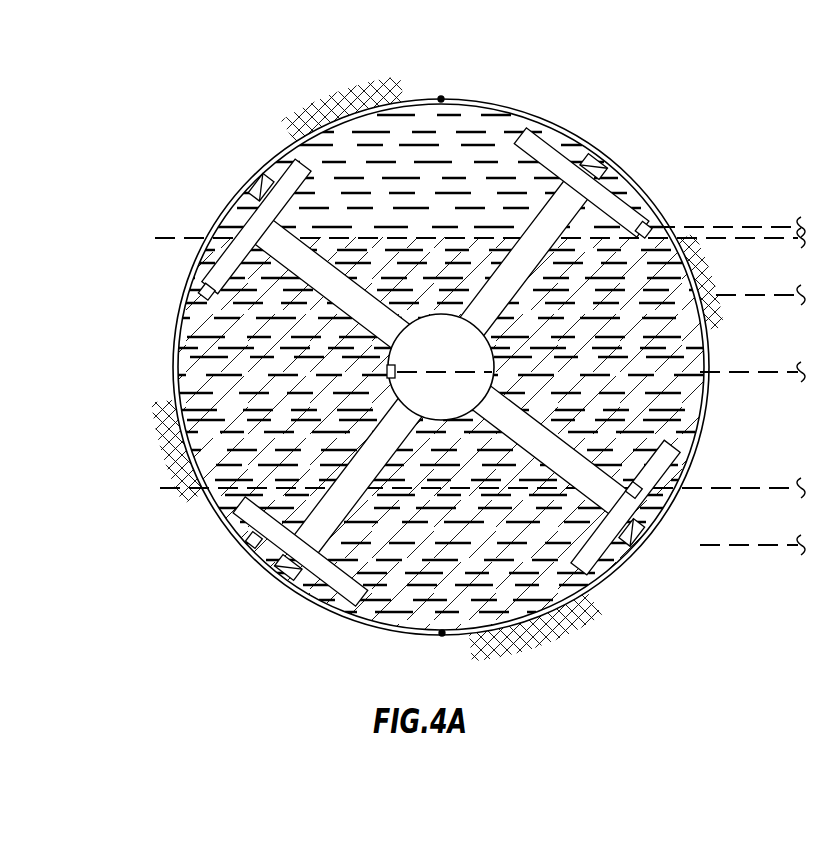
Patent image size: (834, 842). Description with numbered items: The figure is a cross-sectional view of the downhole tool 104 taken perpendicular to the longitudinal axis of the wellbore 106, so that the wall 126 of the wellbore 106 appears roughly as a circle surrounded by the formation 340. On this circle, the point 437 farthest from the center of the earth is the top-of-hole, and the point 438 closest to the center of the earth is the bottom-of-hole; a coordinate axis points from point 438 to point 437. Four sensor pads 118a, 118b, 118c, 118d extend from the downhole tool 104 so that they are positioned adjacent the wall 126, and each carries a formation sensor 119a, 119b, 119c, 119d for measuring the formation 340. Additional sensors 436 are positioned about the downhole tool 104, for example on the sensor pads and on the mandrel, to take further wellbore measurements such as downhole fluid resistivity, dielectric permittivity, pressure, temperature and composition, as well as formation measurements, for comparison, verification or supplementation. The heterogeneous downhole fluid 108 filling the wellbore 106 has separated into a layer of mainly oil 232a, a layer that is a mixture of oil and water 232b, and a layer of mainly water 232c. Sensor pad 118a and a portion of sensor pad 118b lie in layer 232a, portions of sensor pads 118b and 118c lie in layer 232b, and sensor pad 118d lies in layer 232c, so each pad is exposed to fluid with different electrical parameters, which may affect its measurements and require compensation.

The formation 340 is at (641, 114).
The downhole tool 104 is at (469, 246).
The wellbore 106 is at (529, 607).
The downhole fluid 108 is at (203, 348).
The wall 126 is at (378, 101).
The sensor pad 118a is at (620, 196).
The sensor pad 118b is at (237, 222).
The sensor pad 118c is at (652, 511).
The sensor pad 118d is at (307, 580).
The formation sensor 119a is at (606, 162).
The formation sensor 119b is at (255, 182).
The formation sensor 119c is at (642, 541).
The formation sensor 119d is at (276, 574).
The fluid layer of mainly oil 232a is at (326, 140).
The fluid layer of oil and water mixture 232b is at (186, 312).
The fluid layer of mainly water 232c is at (194, 500).
The additional sensors 436 is at (650, 224).
The top-of-hole point 437 is at (441, 98).
The bottom-of-hole point 438 is at (442, 634).